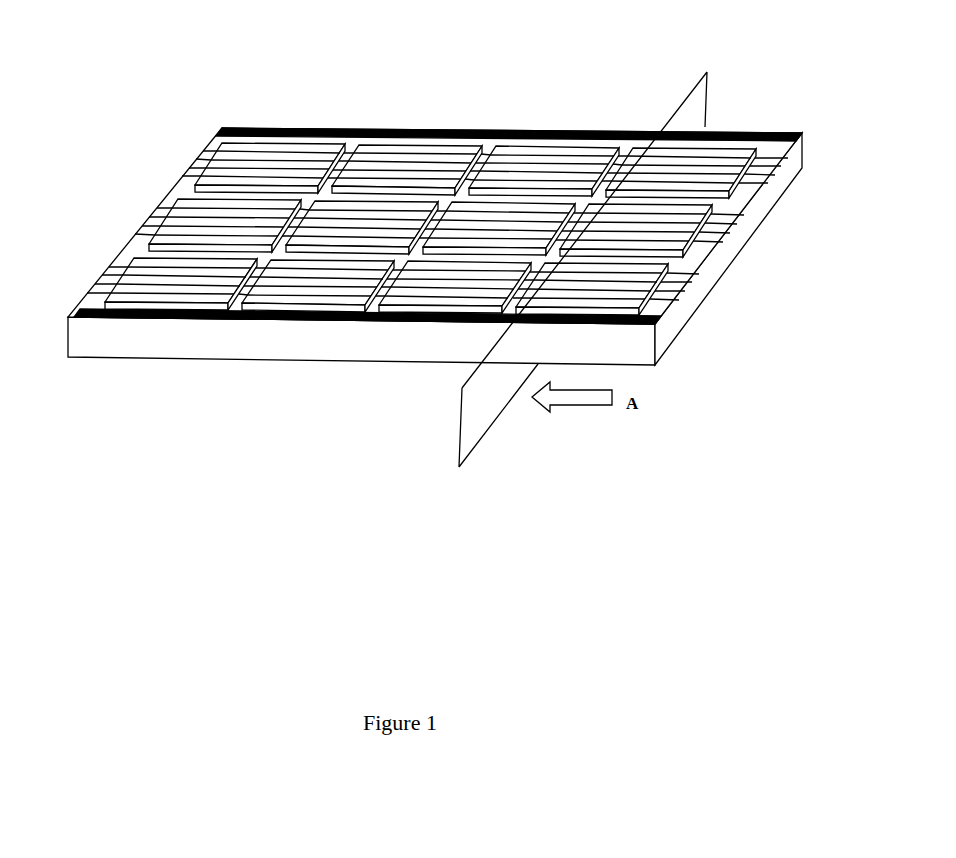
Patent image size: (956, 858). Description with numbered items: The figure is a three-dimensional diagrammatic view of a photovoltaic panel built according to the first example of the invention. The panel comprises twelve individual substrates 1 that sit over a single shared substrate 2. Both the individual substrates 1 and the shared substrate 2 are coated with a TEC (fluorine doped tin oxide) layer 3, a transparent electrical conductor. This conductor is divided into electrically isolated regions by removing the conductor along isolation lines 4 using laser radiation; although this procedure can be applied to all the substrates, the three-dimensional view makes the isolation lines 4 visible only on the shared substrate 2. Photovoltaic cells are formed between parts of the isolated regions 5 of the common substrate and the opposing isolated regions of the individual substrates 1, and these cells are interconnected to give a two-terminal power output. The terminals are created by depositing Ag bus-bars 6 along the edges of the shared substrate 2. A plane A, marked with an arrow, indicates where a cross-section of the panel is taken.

The individual substrate 1 is at (295, 163).
The shared substrate 2 is at (157, 358).
The TEC (fluorine doped tin oxide) layer 3 is at (172, 202).
The isolation line 4 is at (207, 150).
The isolated region of the common substrate 5 is at (152, 220).
The Ag bus-bar 6 is at (97, 318).